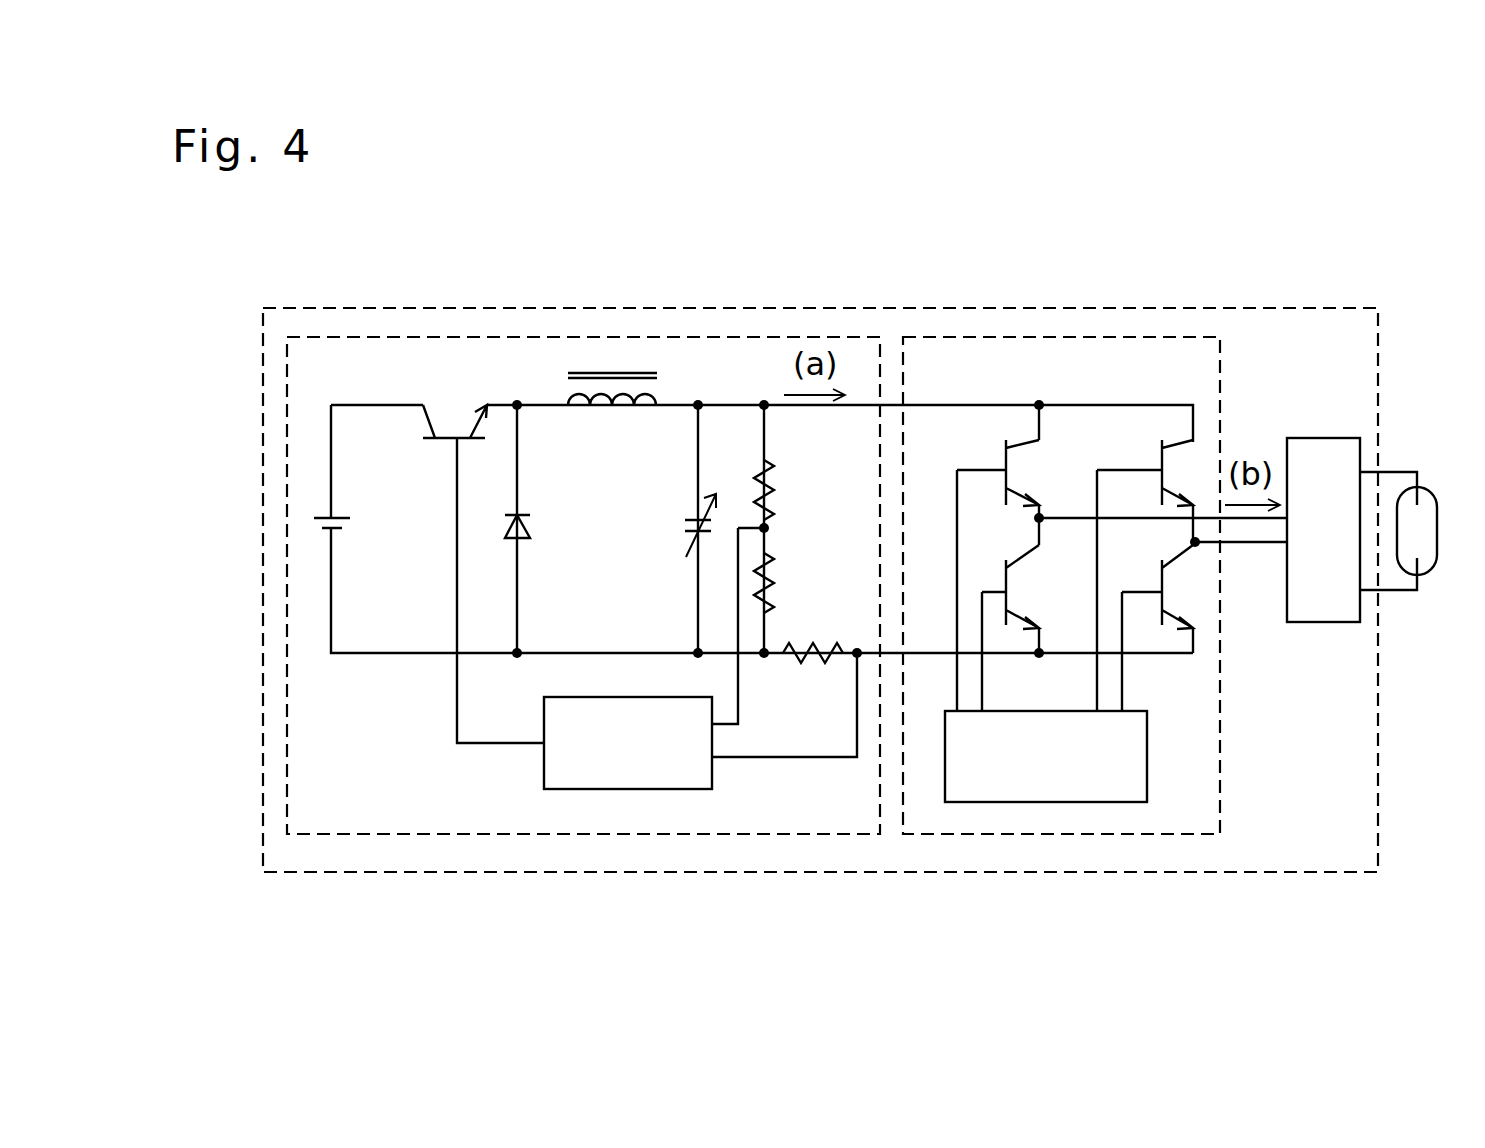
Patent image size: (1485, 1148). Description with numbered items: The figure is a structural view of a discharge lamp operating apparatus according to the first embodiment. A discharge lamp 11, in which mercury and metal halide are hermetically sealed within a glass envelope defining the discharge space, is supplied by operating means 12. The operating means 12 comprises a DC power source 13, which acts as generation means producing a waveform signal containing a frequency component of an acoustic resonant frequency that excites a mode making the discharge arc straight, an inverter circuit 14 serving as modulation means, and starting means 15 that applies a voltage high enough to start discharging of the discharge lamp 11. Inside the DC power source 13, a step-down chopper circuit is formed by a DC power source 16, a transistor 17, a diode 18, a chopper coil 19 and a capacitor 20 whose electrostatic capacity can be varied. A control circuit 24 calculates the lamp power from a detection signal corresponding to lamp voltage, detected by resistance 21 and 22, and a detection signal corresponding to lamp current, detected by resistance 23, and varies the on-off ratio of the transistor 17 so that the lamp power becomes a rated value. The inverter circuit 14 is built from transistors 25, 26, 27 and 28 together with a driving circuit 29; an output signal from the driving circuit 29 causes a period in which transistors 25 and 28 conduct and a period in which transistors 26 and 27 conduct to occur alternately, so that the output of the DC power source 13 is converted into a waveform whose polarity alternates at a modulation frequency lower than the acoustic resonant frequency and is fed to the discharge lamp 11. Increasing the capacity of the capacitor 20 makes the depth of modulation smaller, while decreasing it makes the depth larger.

The discharge lamp 11 is at (1432, 498).
The operating means 12 is at (1292, 310).
The DC power source 13 is at (378, 836).
The inverter circuit 14 is at (1222, 783).
The starting means 15 is at (1313, 624).
The DC power source 16 is at (338, 530).
The transistor 17 is at (428, 440).
The diode 18 is at (522, 532).
The chopper coil 19 is at (613, 408).
The capacitor 20 is at (683, 540).
The resistance 21 is at (780, 490).
The resistance 22 is at (780, 587).
The resistance 23 is at (808, 665).
The control circuit 24 is at (713, 778).
The transistor 25 is at (1002, 444).
The transistor 26 is at (1160, 444).
The transistor 27 is at (1005, 570).
The transistor 28 is at (1148, 574).
The driving circuit 29 is at (1148, 766).